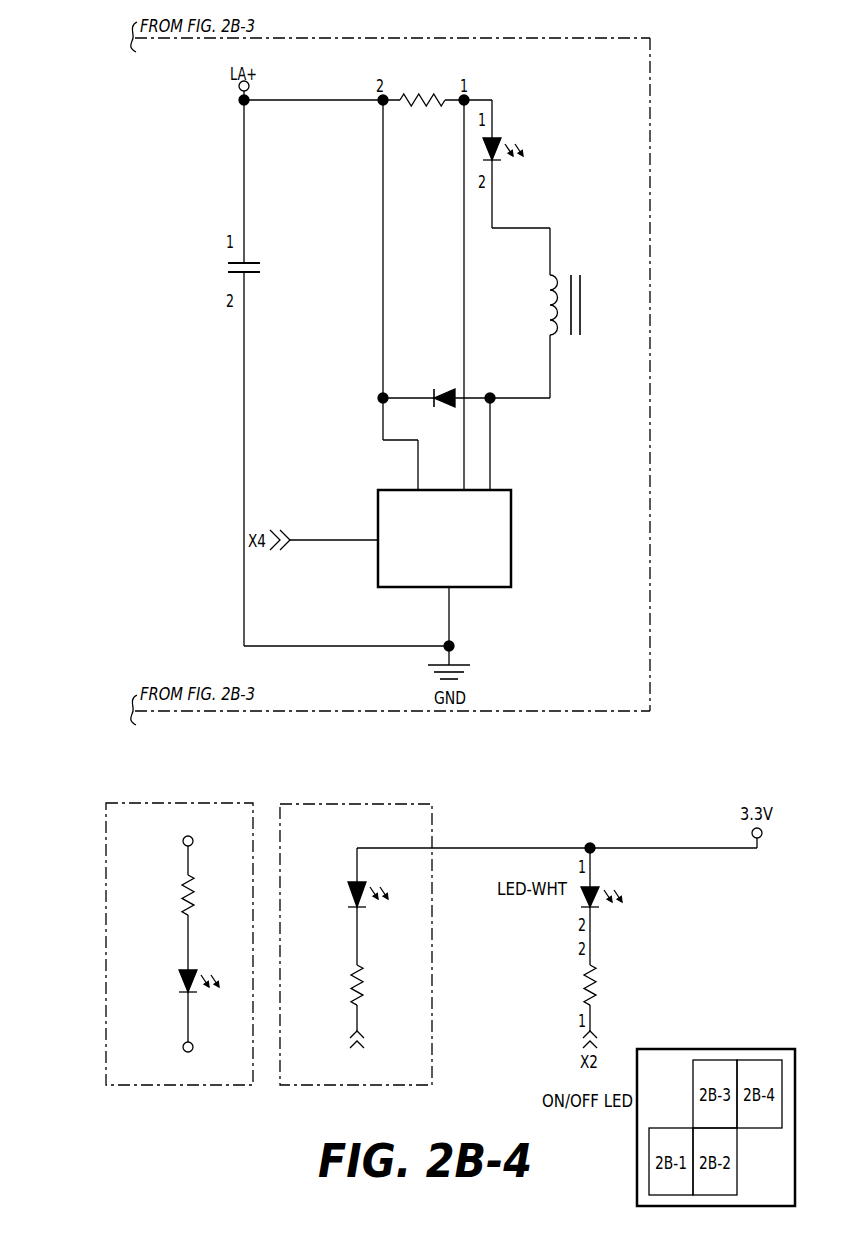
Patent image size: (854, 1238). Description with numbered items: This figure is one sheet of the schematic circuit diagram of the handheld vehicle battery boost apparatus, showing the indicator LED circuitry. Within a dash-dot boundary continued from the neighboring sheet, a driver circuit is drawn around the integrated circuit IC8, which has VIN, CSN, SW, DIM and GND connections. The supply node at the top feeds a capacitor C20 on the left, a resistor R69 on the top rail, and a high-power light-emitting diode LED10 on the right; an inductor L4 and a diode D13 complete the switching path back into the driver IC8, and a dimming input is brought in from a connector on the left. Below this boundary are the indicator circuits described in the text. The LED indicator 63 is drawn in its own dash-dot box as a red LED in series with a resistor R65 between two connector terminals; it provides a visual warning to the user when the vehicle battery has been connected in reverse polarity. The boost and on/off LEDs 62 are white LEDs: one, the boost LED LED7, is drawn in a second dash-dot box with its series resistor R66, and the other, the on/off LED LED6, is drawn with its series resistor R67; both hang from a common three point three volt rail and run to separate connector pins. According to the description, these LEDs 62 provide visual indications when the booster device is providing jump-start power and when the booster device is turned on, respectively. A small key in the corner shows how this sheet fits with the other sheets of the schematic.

The boost and on/off LEDs 62 is at (360, 803).
The LED indicator 63 is at (192, 803).
The XN2113 LED driver IC IC8 is at (474, 538).
The 0.5W LED LED10 is at (528, 159).
The resistor 130 R69 is at (422, 99).
The capacitor 10uF C20 is at (262, 274).
The diode SK24 D13 is at (432, 401).
The inductor 68uH L4 is at (596, 305).
The resistor 820 R65 is at (205, 892).
The resistor 130 R66 is at (340, 985).
The resistor 130 R67 is at (606, 984).
The white LED LED6 is at (625, 898).
The white LED LED7 is at (386, 910).